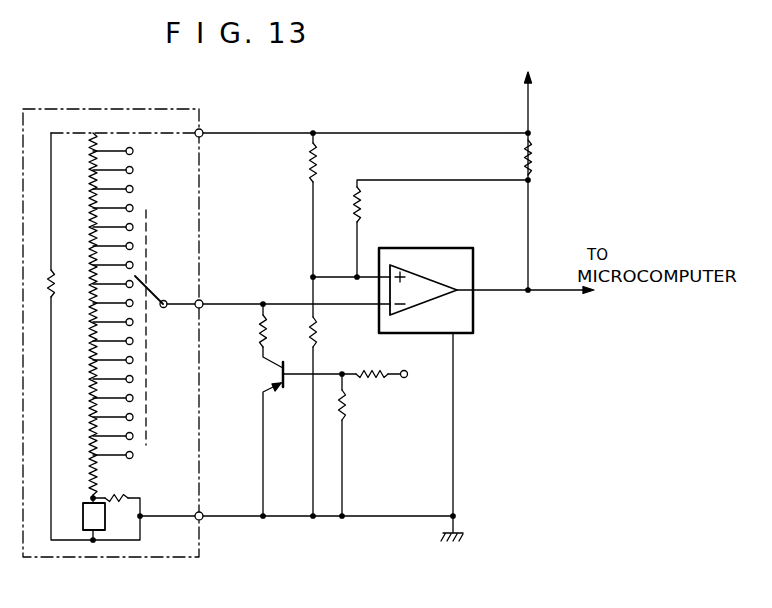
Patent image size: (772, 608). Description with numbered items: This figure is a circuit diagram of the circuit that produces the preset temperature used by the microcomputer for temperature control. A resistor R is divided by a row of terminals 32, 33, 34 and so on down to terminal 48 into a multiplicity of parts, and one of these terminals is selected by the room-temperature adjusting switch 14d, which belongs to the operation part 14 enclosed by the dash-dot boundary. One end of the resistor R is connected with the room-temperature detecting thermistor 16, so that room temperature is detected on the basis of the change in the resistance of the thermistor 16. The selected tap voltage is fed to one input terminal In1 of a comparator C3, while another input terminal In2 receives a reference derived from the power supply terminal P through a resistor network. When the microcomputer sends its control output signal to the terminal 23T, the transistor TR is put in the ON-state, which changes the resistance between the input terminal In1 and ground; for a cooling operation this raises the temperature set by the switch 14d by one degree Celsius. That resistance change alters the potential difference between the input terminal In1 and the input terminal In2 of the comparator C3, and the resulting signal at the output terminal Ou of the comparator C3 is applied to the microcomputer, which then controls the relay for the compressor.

The operation part 14 is at (111, 107).
The room-temperature adjusting switch 14d is at (151, 292).
The room-temperature detecting thermistor 16 is at (83, 515).
The terminal 32 is at (126, 153).
The terminal 33 is at (138, 171).
The terminal 34 is at (126, 190).
The terminal 48 is at (127, 456).
The resistor R is at (79, 317).
The transistor TR is at (263, 374).
The terminal 23T is at (404, 378).
The comparator C3 is at (463, 279).
The input terminal In1 is at (356, 307).
The input terminal In2 is at (368, 272).
The output terminal Ou is at (561, 295).
The power supply terminal P is at (534, 85).